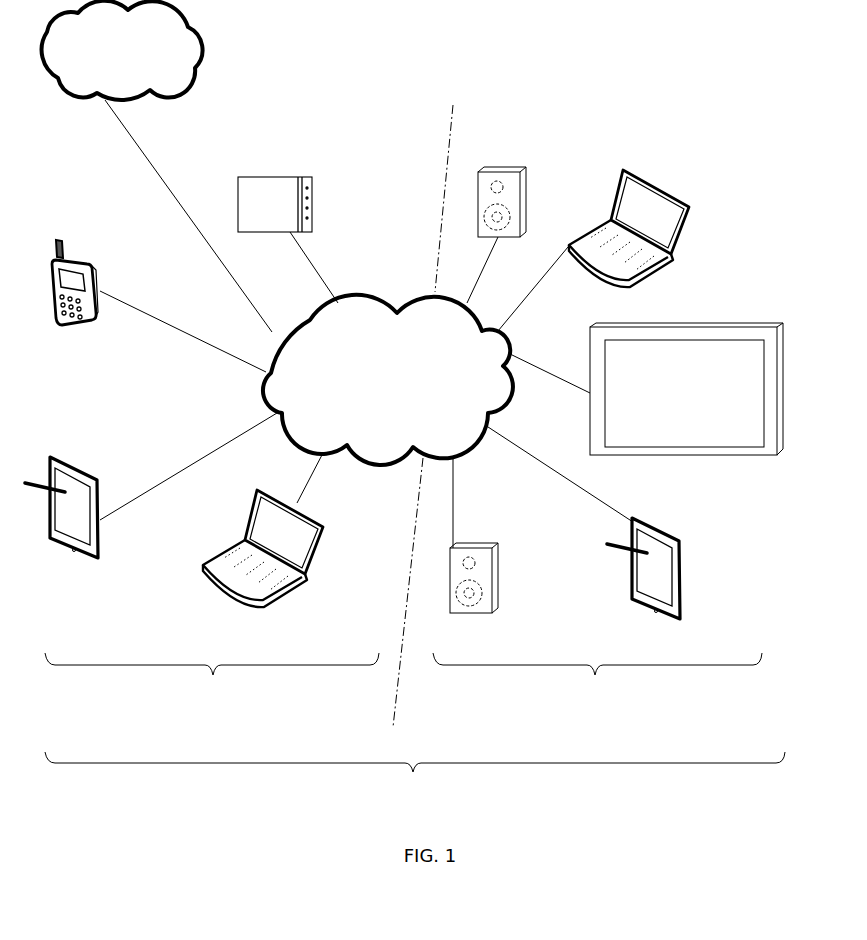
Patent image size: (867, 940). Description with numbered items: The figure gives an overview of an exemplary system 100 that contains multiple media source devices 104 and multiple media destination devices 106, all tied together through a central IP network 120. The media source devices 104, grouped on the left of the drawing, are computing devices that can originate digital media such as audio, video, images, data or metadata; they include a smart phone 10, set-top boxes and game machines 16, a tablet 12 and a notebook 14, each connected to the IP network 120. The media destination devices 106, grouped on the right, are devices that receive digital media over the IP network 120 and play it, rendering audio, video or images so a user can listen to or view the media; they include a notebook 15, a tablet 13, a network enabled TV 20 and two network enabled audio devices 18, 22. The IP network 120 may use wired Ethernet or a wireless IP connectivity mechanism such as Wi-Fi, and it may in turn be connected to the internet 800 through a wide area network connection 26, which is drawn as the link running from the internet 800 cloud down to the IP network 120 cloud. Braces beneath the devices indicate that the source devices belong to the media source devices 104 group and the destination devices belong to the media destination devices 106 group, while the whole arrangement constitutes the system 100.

The internet 800 is at (122, 50).
The IP network 120 is at (388, 380).
The wide area network connection 26 is at (188, 216).
The smart phone 10 is at (64, 232).
The set-top boxes and game machines 16 is at (240, 190).
The network enabled audio device 18 is at (510, 180).
The notebook 15 is at (668, 207).
The network enabled TV 20 is at (667, 326).
The network enabled audio device 22 is at (492, 542).
The tablet 12 is at (100, 560).
The tablet 13 is at (682, 622).
The notebook 14 is at (302, 540).
The media source devices 104 is at (128, 703).
The media destination devices 106 is at (492, 703).
The system 100 is at (415, 778).